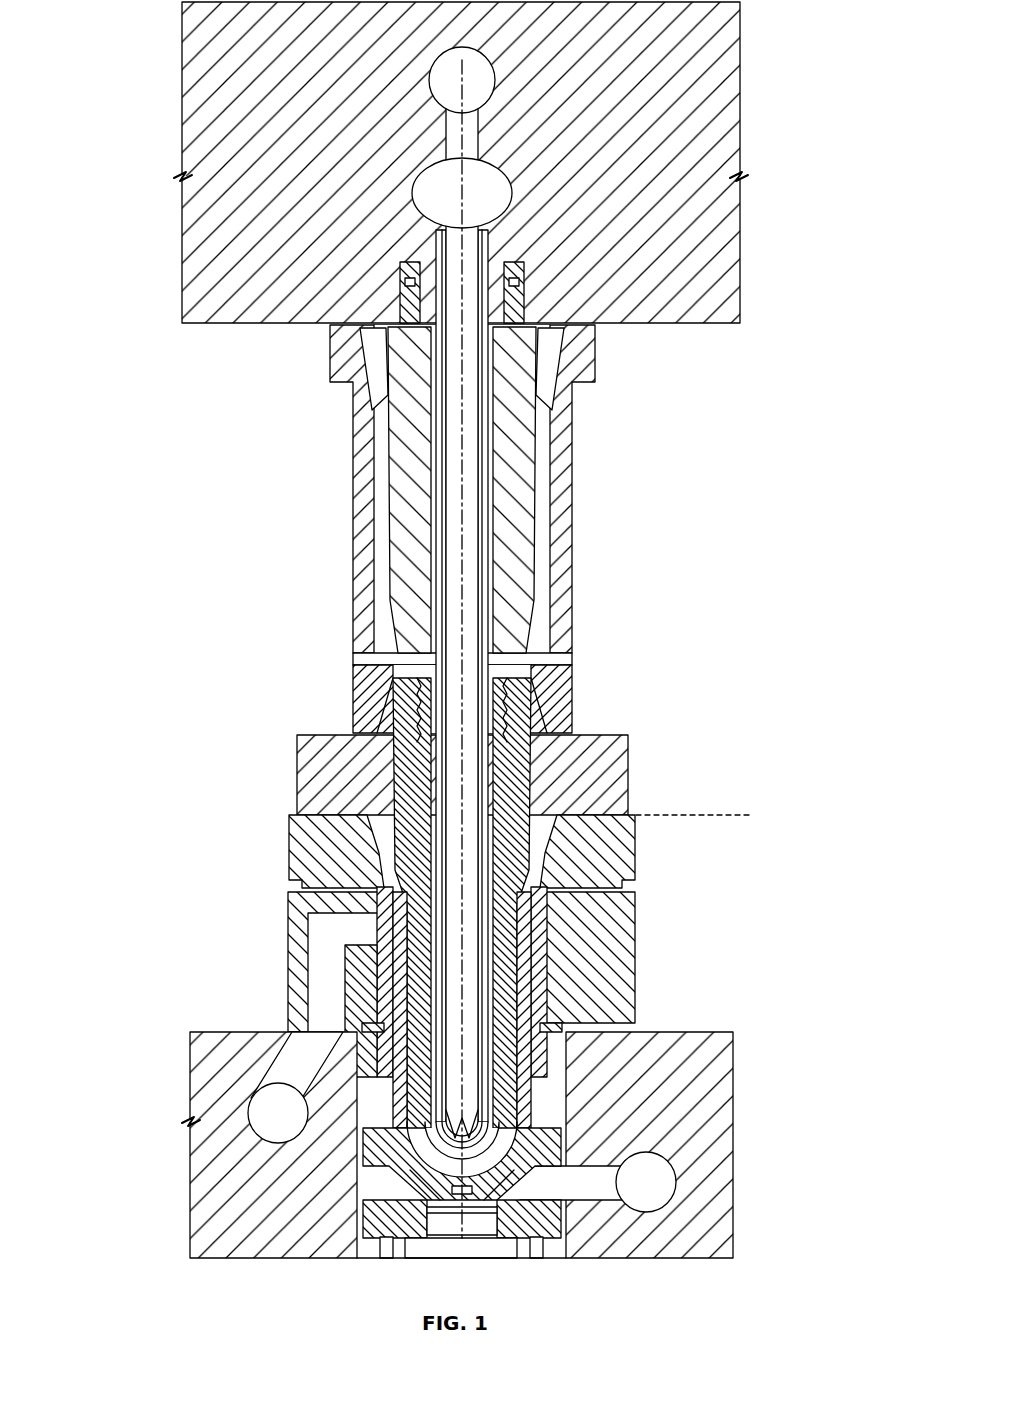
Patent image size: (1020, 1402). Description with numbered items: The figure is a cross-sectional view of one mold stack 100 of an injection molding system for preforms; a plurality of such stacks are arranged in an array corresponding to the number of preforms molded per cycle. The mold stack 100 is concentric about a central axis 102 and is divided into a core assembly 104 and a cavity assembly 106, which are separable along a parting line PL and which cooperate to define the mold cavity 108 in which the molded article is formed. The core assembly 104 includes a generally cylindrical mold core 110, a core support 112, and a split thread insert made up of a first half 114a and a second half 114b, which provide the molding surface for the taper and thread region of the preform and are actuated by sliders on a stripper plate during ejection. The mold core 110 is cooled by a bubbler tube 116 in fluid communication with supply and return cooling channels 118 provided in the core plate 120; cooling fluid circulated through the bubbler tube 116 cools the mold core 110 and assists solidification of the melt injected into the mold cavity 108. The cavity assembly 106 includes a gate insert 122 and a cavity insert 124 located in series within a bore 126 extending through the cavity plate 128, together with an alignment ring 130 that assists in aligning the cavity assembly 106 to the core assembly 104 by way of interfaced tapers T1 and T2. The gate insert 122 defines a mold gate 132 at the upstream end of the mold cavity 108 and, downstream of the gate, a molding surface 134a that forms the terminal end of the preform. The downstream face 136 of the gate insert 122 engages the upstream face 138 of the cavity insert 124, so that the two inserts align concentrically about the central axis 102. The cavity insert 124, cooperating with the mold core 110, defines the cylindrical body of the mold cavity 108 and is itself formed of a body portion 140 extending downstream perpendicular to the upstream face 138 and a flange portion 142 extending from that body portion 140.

The mold stack 100 is at (444, 661).
The central axis 102 is at (497, 82).
The core assembly 104 is at (465, 726).
The cavity assembly 106 is at (448, 1176).
The mold cavity 108 is at (505, 797).
The mold core 110 is at (410, 468).
The core support 112 is at (365, 530).
The first half of split thread insert 114a is at (317, 767).
The second half of split thread insert 114b is at (616, 795).
The bubbler tube 116 is at (435, 578).
The cooling channels 118 is at (438, 74).
The core plate 120 is at (218, 98).
The gate insert 122 is at (552, 1249).
The cavity insert 124 is at (612, 973).
The bore 126 is at (556, 1017).
The cavity plate 128 is at (717, 1234).
The alignment ring 130 is at (614, 841).
The mold gate 132 is at (455, 1253).
The molding surface 134a is at (413, 1147).
The downstream face 136 is at (567, 1113).
The upstream face 138 is at (567, 1143).
The body portion 140 is at (372, 1062).
The flange portion 142 is at (357, 978).
The interfaced taper T1 is at (366, 842).
The interfaced taper T2 is at (558, 858).
The parting line PL is at (712, 819).